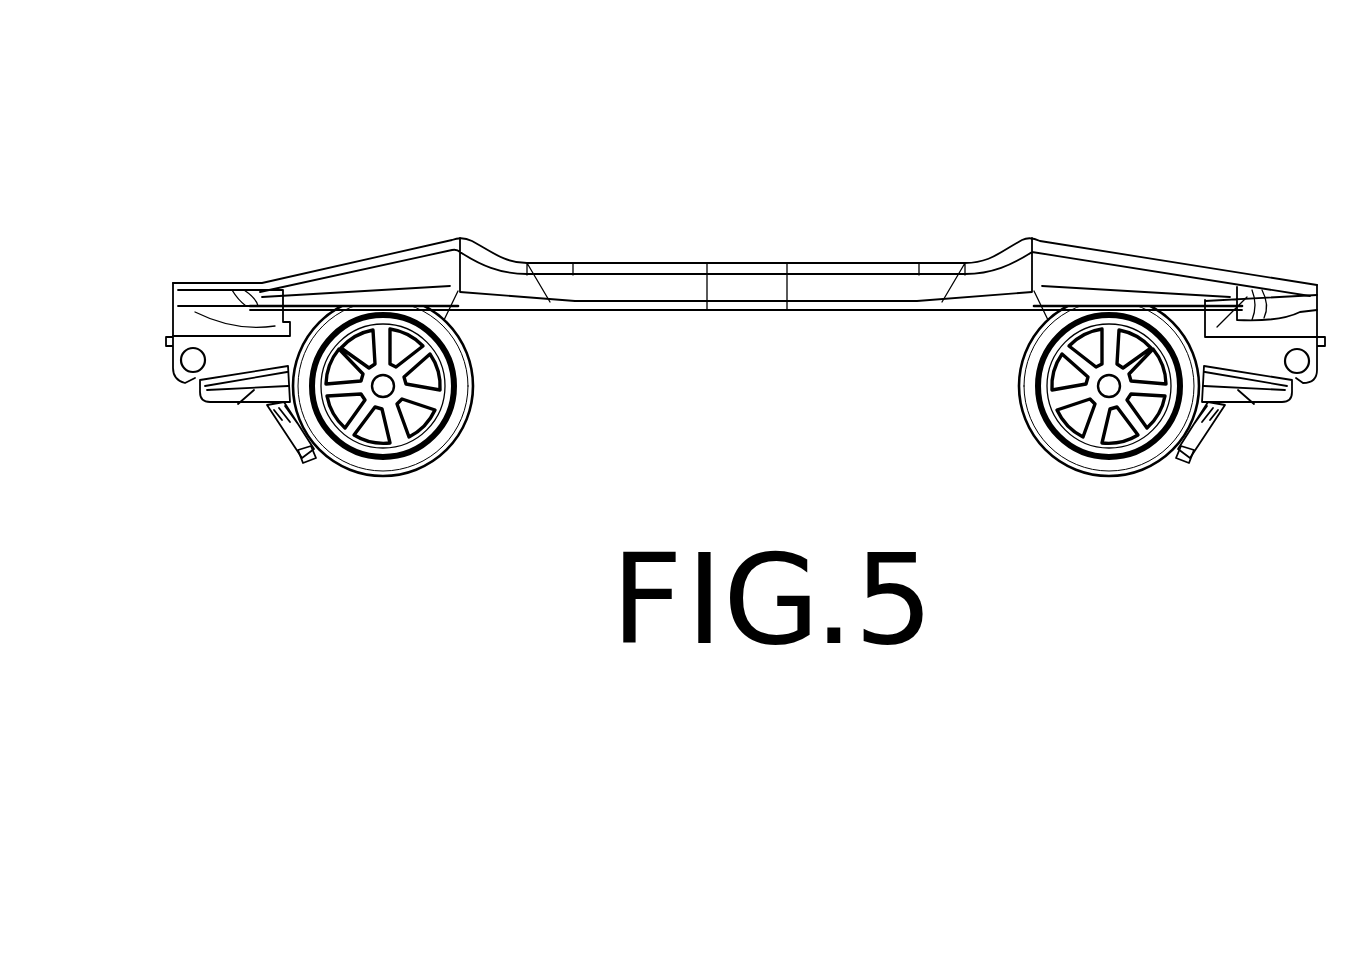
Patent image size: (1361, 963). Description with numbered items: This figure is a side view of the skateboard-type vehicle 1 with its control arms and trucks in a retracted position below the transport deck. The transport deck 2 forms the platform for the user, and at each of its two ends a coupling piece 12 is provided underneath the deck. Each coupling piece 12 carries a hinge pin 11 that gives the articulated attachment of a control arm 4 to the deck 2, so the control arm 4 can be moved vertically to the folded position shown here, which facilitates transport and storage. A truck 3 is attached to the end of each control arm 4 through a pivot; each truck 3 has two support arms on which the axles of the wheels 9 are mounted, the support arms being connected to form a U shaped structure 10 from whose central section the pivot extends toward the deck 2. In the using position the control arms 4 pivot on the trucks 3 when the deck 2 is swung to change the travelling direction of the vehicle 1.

The vehicle 1 is at (603, 193).
The transport deck 2 is at (833, 278).
The truck 3 is at (270, 448).
The control arm 4 is at (255, 385).
The wheel 9 is at (445, 448).
The U shaped structure 10 is at (303, 457).
The hinge pin 11 is at (190, 372).
The coupling piece 12 is at (190, 288).